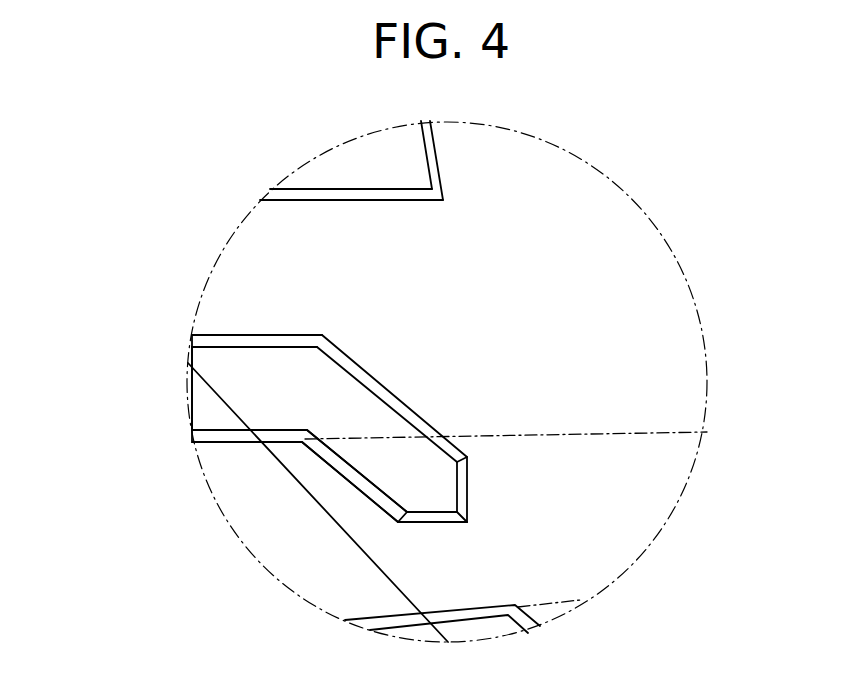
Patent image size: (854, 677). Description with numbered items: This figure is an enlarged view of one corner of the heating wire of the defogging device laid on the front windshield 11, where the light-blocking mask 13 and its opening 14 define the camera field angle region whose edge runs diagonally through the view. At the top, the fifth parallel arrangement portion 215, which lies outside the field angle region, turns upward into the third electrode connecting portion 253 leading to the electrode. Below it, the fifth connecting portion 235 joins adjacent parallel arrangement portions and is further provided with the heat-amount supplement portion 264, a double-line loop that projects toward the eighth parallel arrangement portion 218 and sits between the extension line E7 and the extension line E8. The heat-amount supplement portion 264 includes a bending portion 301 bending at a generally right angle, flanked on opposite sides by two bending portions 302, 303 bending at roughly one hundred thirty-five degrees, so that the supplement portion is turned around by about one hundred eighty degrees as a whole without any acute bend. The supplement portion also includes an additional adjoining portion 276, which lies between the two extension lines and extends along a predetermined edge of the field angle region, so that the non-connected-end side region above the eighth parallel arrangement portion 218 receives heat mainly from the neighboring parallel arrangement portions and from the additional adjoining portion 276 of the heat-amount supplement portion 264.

The front windshield 11 is at (647, 297).
The mask 13 is at (582, 225).
The opening 14 is at (257, 530).
The fifth parallel arrangement portion 215 is at (335, 189).
The eighth parallel arrangement portion 218 is at (390, 617).
The fifth connecting portion 235 is at (257, 335).
The third electrode connecting portion 253 is at (437, 148).
The heat-amount supplement portion 264 is at (377, 381).
The additional adjoining portion 276 is at (333, 476).
The bending portion 301 is at (466, 523).
The bending portion 302 is at (467, 457).
The bending portion 303 is at (400, 518).
The extension line E7 is at (630, 432).
The extension line E8 is at (567, 602).